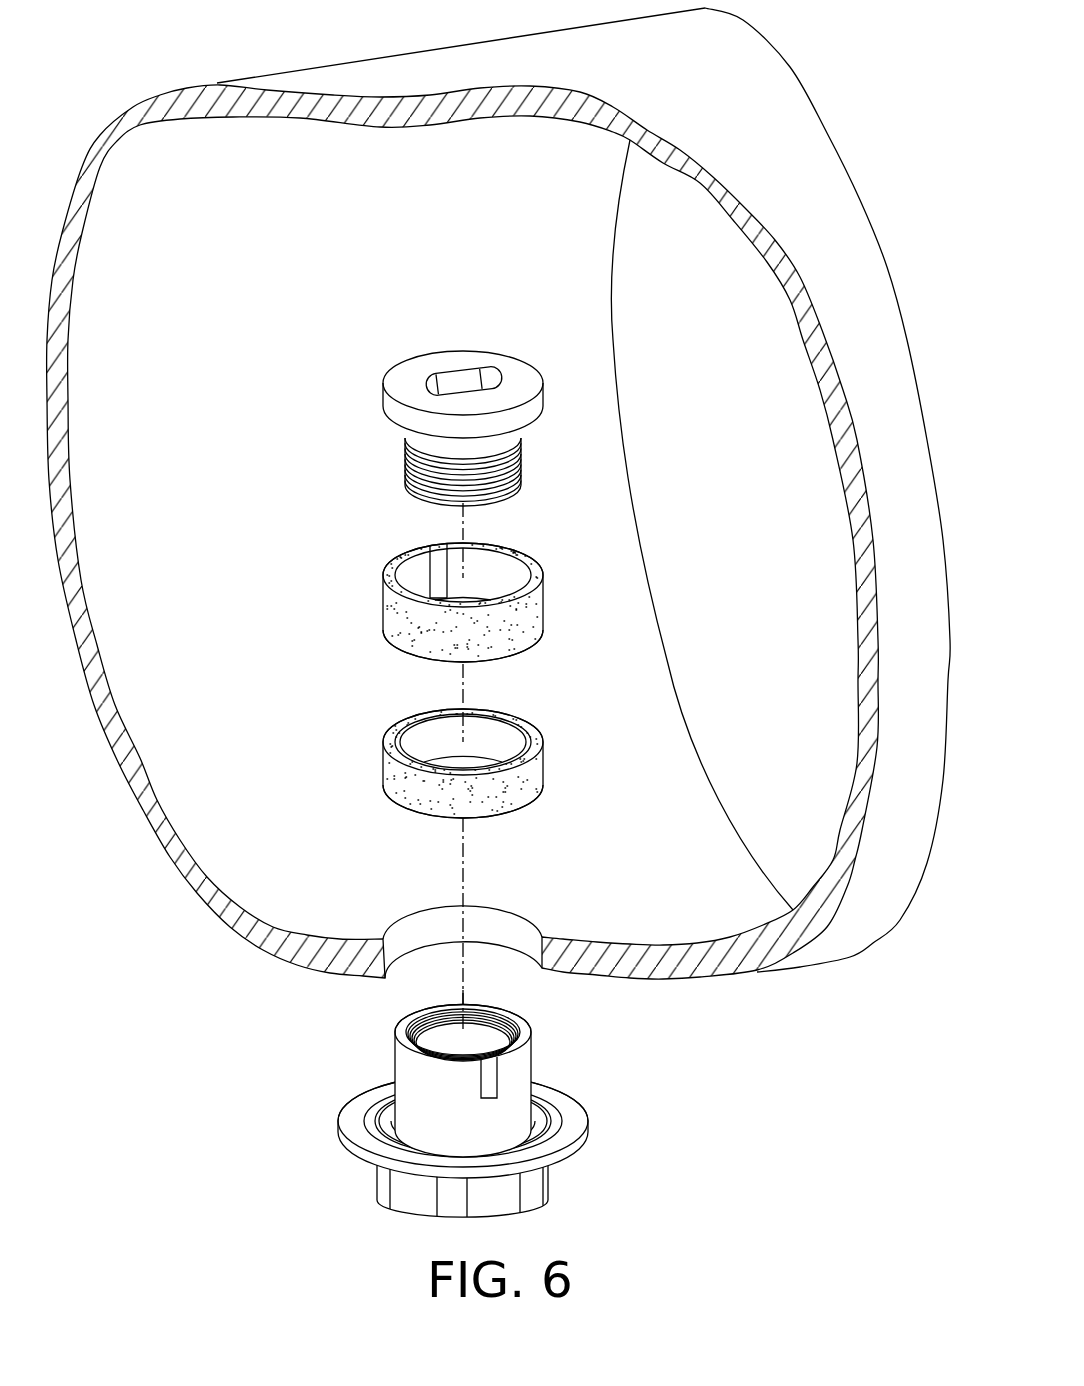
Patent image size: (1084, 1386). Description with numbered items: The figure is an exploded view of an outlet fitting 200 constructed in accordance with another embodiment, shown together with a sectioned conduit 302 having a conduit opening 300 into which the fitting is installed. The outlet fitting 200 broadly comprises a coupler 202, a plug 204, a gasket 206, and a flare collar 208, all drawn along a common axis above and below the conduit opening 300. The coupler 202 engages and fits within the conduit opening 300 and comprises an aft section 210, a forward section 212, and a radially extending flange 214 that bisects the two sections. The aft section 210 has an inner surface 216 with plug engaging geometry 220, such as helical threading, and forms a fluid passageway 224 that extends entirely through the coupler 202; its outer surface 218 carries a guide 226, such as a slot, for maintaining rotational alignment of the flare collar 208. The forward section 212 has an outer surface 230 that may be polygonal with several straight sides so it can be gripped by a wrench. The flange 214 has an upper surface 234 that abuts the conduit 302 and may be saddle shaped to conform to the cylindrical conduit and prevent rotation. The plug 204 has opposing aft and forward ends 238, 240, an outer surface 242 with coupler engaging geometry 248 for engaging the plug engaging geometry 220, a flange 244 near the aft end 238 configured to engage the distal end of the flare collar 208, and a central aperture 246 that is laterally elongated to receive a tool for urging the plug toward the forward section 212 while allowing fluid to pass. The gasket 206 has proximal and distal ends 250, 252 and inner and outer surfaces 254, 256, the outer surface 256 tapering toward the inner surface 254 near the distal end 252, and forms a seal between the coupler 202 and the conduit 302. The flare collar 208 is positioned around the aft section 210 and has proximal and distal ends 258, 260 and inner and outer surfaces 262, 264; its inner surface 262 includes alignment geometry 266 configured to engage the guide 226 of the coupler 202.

The outlet fitting 200 is at (262, 1074).
The coupler 202 is at (327, 1131).
The plug 204 is at (332, 399).
The gasket 206 is at (332, 763).
The flare collar 208 is at (332, 601).
The aft section 210 is at (374, 1036).
The forward section 212 is at (528, 1210).
The radially extending flange 214 is at (529, 1126).
The inner surface 216 is at (500, 1023).
The outer surface 218 is at (546, 1053).
The plug engaging geometry 220 is at (509, 1033).
The fluid passageway 224 is at (437, 990).
The guide 226 is at (490, 1079).
The outer surface 230 is at (530, 1189).
The upper surface 234 is at (576, 1130).
The aft end 238 is at (540, 357).
The forward end 240 is at (531, 492).
The outer surface 242 is at (533, 451).
The flange 244 is at (546, 403).
The central aperture 246 is at (462, 373).
The coupler engaging geometry 248 is at (405, 456).
The proximal end 250 is at (538, 802).
The distal end 252 is at (540, 729).
The inner surface 254 is at (506, 728).
The outer surface 256 is at (538, 771).
The proximal end 258 is at (538, 645).
The distal end 260 is at (539, 558).
The inner surface 262 is at (500, 560).
The outer surface 264 is at (536, 607).
The alignment geometry 266 is at (438, 560).
The conduit opening 300 is at (506, 918).
The conduit 302 is at (150, 808).